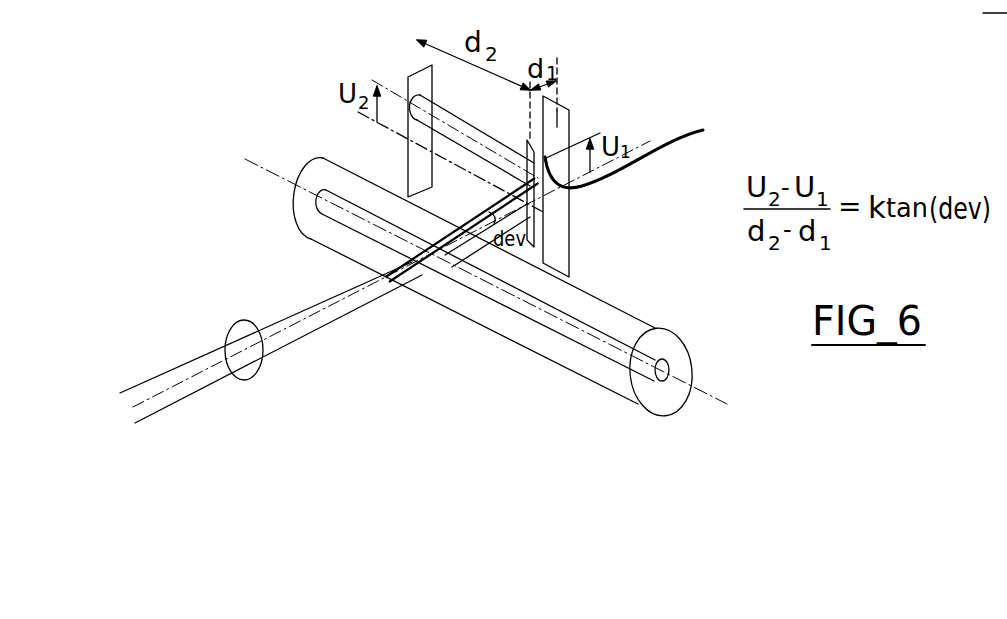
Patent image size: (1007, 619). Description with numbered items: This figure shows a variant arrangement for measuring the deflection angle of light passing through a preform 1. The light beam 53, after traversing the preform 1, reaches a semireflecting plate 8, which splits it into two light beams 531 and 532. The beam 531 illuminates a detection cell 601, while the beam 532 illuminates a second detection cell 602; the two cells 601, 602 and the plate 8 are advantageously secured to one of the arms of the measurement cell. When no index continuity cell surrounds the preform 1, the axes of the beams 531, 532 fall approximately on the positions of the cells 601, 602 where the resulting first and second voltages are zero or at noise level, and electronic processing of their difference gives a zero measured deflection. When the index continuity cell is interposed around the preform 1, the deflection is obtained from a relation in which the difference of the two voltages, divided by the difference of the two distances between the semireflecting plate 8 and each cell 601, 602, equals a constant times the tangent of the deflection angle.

The preform 1 is at (670, 347).
The semireflecting plate 8 is at (548, 240).
The light beam 53 is at (179, 364).
The light beam 531 is at (648, 151).
The light beam 532 is at (482, 136).
The detection cell 601 is at (582, 167).
The detection cell 602 is at (397, 111).